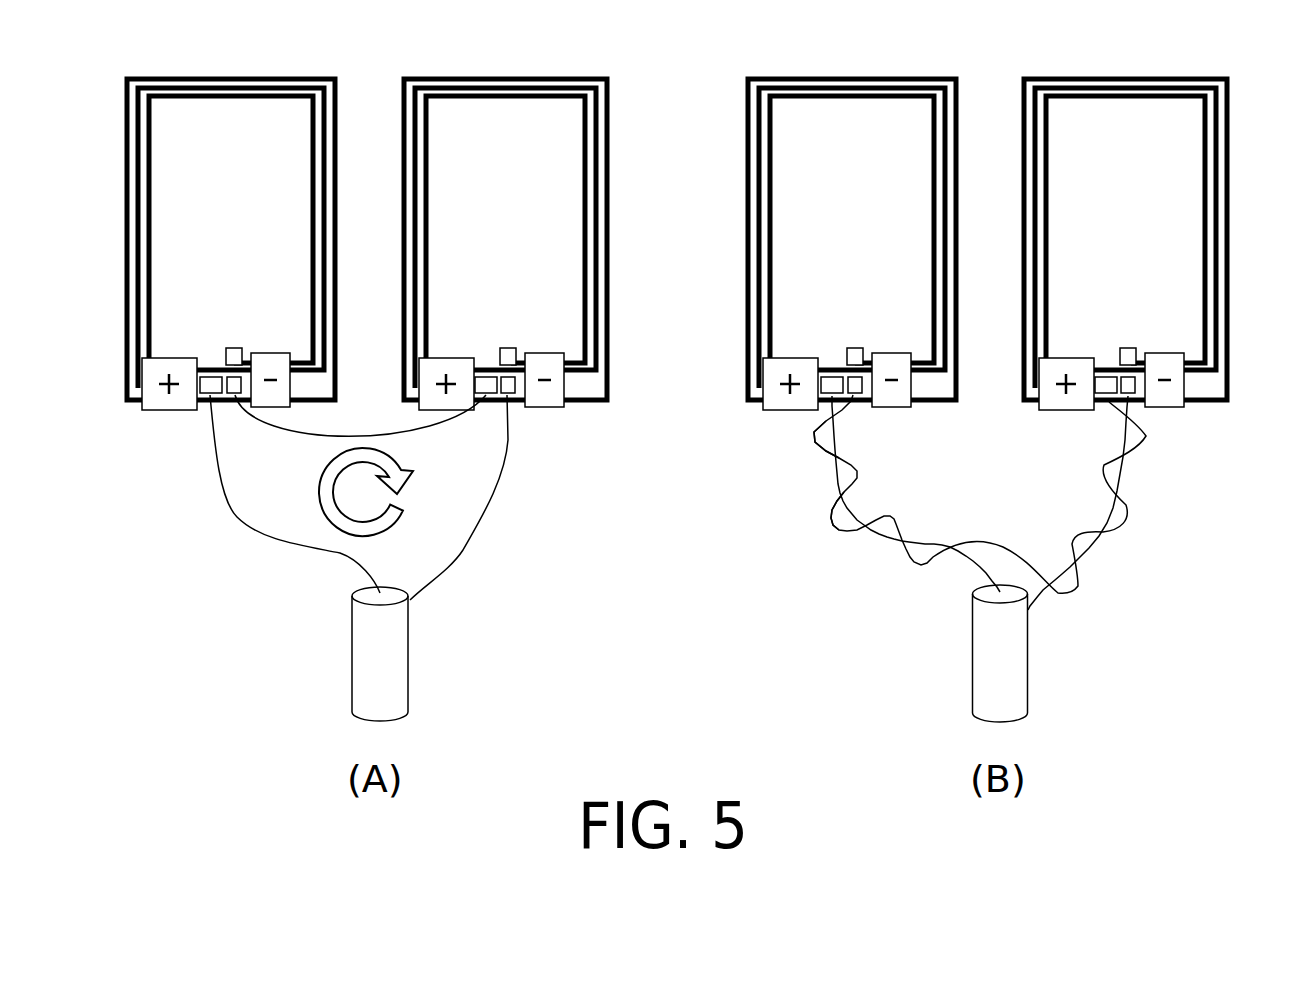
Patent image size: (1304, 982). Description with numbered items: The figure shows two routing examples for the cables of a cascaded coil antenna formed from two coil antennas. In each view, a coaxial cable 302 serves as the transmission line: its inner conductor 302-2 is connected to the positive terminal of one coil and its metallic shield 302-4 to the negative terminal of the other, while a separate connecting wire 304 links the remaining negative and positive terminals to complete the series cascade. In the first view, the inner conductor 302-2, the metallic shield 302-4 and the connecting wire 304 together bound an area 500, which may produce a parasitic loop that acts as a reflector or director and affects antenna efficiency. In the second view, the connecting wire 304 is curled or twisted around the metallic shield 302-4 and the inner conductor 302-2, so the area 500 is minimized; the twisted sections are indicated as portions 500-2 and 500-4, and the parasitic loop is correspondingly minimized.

In FIG. 5A, the coaxial cable 302 is at (337, 673).
In FIG. 5B, the coaxial cable 302 is at (955, 662).
In FIG. 5A, the inner conductor 302-2 is at (341, 560).
In FIG. 5B, the inner conductor 302-2 is at (874, 538).
In FIG. 5A, the metallic shield 302-4 is at (428, 598).
In FIG. 5B, the metallic shield 302-4 is at (1048, 603).
In FIG. 5A, the connecting wire 304 is at (459, 422).
In FIG. 5B, the connecting wire 304 is at (1149, 524).
In FIG. 5A, the area 500 is at (315, 500).
In FIG. 5B, the first twisted wire section 500-2 is at (828, 450).
In FIG. 5B, the second twisted wire section 500-4 is at (836, 522).